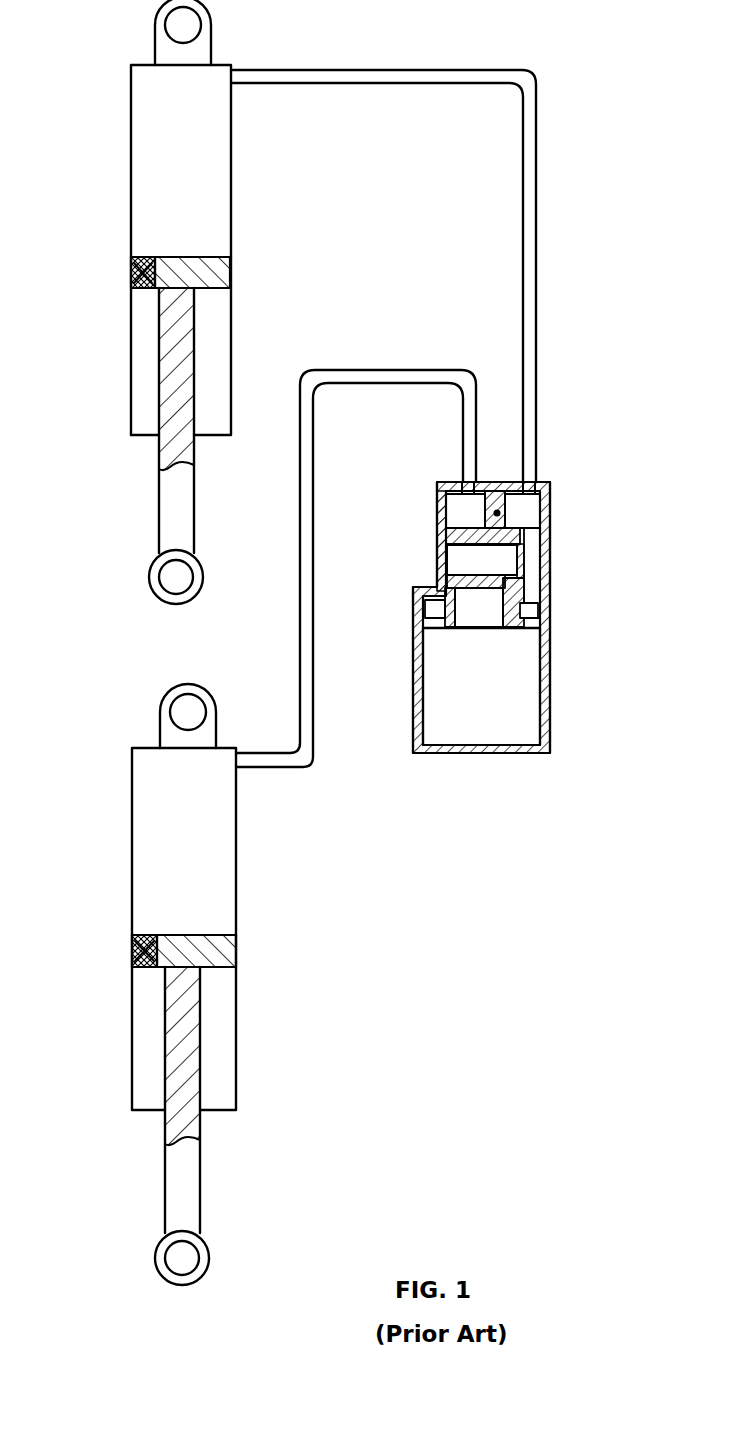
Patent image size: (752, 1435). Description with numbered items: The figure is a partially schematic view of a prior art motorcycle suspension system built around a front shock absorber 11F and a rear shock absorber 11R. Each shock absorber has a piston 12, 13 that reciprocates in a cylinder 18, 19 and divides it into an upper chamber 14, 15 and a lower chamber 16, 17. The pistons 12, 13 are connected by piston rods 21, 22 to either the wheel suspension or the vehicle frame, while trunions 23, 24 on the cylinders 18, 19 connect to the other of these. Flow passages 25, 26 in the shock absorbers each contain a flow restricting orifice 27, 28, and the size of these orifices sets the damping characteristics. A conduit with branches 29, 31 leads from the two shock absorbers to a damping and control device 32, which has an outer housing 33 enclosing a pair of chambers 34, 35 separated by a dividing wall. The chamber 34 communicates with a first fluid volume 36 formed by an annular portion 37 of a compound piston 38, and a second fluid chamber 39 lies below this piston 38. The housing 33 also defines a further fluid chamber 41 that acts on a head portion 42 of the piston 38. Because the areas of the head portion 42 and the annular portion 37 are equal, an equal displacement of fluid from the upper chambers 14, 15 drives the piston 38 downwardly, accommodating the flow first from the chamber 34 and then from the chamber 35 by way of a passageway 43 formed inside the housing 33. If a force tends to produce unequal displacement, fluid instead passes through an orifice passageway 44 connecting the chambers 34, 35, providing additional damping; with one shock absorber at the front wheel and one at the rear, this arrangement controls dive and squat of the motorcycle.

The front shock absorber 11F is at (196, 302).
The rear shock absorber 11R is at (210, 984).
The piston 12 is at (205, 257).
The piston 13 is at (236, 951).
The upper chamber 14 is at (197, 154).
The upper chamber 15 is at (203, 833).
The lower chamber 16 is at (215, 343).
The lower chamber 17 is at (218, 1085).
The cylinder 18 is at (131, 400).
The cylinder 19 is at (237, 1028).
The piston rod 21 is at (190, 518).
The piston rod 22 is at (168, 1192).
The trunion 23 is at (155, 41).
The trunion 24 is at (160, 721).
The flow passage 25 is at (146, 257).
The flow passage 26 is at (148, 935).
The flow restricting orifice 27 is at (131, 272).
The flow restricting orifice 28 is at (150, 968).
The conduit branch 29 is at (536, 238).
The conduit branch 31 is at (300, 629).
The damping and control device 32 is at (547, 531).
The outer housing 33 is at (551, 482).
The chamber 34 is at (513, 500).
The chamber 35 is at (447, 484).
The first fluid volume 36 is at (531, 608).
The annular portion 37 is at (553, 625).
The piston 38 is at (482, 630).
The second fluid chamber 39 is at (487, 731).
The fluid chamber 41 is at (490, 573).
The head portion 42 is at (530, 576).
The passageway 43 is at (437, 525).
The orifice passageway 44 is at (494, 513).